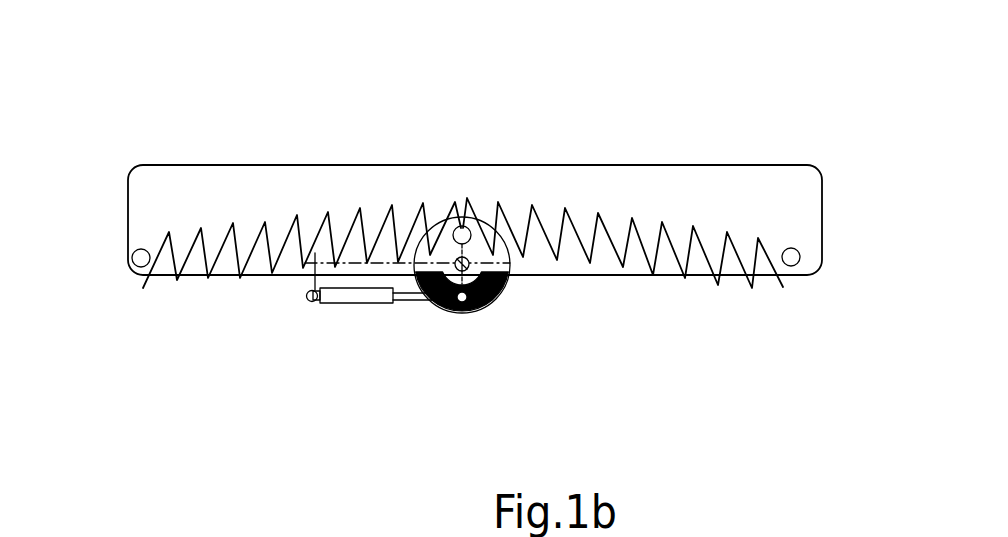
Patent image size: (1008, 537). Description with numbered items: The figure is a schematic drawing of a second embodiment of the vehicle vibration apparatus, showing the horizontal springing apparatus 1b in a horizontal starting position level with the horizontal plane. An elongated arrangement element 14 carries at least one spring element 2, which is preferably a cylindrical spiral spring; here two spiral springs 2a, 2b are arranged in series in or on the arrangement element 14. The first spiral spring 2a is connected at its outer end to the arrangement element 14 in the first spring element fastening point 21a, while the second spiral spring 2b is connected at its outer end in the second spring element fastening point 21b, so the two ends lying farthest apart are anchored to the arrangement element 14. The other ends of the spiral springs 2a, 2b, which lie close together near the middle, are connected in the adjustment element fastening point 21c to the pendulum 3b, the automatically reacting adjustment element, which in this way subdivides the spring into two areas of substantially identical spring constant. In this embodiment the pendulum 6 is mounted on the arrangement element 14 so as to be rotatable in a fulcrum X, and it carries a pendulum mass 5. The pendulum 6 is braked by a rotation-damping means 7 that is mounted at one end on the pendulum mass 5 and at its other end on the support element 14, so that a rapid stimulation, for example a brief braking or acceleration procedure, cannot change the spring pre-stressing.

The horizontal springing apparatus 1b is at (513, 236).
The spring element 2 is at (515, 295).
The first spiral spring 2a is at (715, 280).
The second spiral spring 2b is at (232, 272).
The pendulum 3b is at (426, 368).
The pendulum mass 5 is at (487, 303).
The pendulum 6 is at (510, 273).
The rotation-damping means 7 is at (361, 304).
The arrangement element 14 is at (667, 187).
The first spring element fastening point 21a is at (791, 248).
The second spring element fastening point 21b is at (142, 249).
The adjustment element fastening point 21c is at (462, 226).
The fulcrum X is at (462, 264).